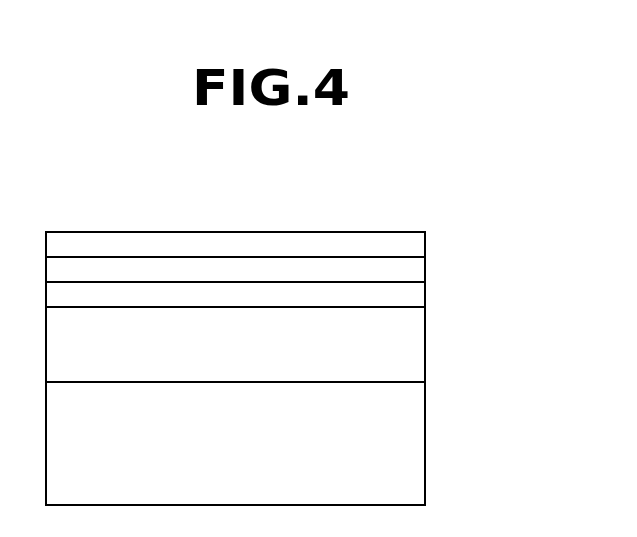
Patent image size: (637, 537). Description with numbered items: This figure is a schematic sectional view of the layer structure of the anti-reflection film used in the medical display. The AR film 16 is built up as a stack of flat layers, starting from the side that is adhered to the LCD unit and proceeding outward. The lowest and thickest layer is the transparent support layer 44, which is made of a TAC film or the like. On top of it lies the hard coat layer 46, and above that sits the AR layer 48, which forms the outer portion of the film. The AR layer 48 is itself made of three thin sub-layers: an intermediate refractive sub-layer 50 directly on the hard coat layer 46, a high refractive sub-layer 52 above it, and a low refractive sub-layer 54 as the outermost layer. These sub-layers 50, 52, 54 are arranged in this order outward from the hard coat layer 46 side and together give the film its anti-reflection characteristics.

The AR film 16 is at (348, 197).
The transparent support layer 44 is at (417, 419).
The hard coat layer 46 is at (417, 341).
The AR layer 48 is at (490, 225).
The intermediate refractive sub-layer 50 is at (417, 294).
The high refractive sub-layer 52 is at (417, 268).
The low refractive sub-layer 54 is at (417, 245).